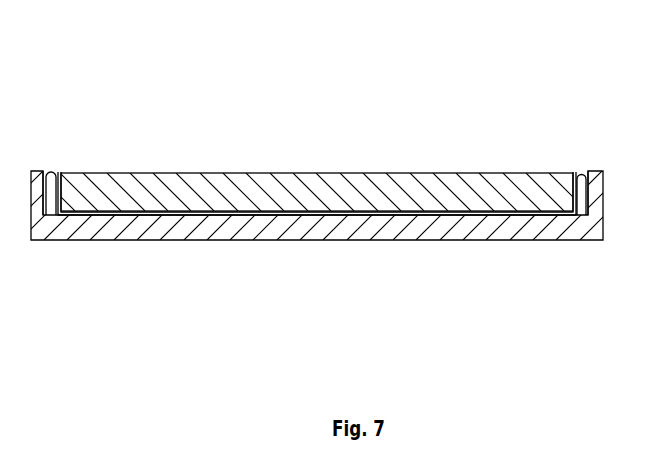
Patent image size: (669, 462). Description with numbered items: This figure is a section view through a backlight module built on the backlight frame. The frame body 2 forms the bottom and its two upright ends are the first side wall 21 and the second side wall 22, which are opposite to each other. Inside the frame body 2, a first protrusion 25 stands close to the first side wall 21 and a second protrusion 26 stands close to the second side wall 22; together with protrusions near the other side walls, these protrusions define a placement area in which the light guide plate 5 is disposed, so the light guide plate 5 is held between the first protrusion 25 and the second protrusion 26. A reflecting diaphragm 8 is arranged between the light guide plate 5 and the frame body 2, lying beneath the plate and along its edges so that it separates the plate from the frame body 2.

The frame body 2 is at (208, 240).
The first side wall 21 is at (44, 176).
The second side wall 22 is at (592, 178).
The first protrusion 25 is at (62, 173).
The second protrusion 26 is at (572, 178).
The light guide plate 5 is at (163, 180).
The reflecting diaphragm 8 is at (307, 213).